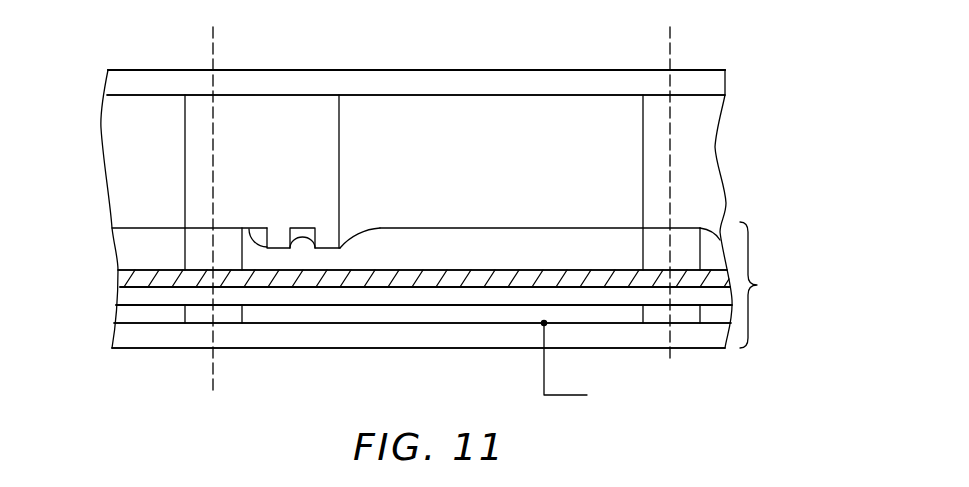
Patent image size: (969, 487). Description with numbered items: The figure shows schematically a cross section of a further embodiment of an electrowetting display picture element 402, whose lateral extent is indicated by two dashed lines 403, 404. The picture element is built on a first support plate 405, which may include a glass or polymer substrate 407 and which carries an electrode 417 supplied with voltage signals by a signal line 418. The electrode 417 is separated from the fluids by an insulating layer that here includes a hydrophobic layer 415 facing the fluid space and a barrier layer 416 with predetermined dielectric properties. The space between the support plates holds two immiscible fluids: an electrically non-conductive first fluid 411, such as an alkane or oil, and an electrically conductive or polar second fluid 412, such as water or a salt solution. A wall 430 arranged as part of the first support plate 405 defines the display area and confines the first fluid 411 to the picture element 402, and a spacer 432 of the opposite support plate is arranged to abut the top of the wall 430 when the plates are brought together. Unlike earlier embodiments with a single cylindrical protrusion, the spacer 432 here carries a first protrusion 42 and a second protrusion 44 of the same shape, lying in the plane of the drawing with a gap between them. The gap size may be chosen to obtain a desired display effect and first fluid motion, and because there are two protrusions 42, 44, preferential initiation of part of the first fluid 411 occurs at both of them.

The picture element 402 is at (383, 66).
The dashed line 403 is at (215, 33).
The dashed line 404 is at (670, 33).
The first support plate 405 is at (774, 285).
The substrate 407 is at (703, 85).
The first fluid 411 is at (528, 240).
The second fluid 412 is at (543, 125).
The hydrophobic layer 415 is at (472, 278).
The barrier layer 416 is at (378, 295).
The electrode 417 is at (285, 313).
The signal line 418 is at (563, 397).
The wall 430 is at (193, 248).
The spacer 432 is at (198, 107).
The first protrusion 42 is at (279, 233).
The second protrusion 44 is at (330, 232).